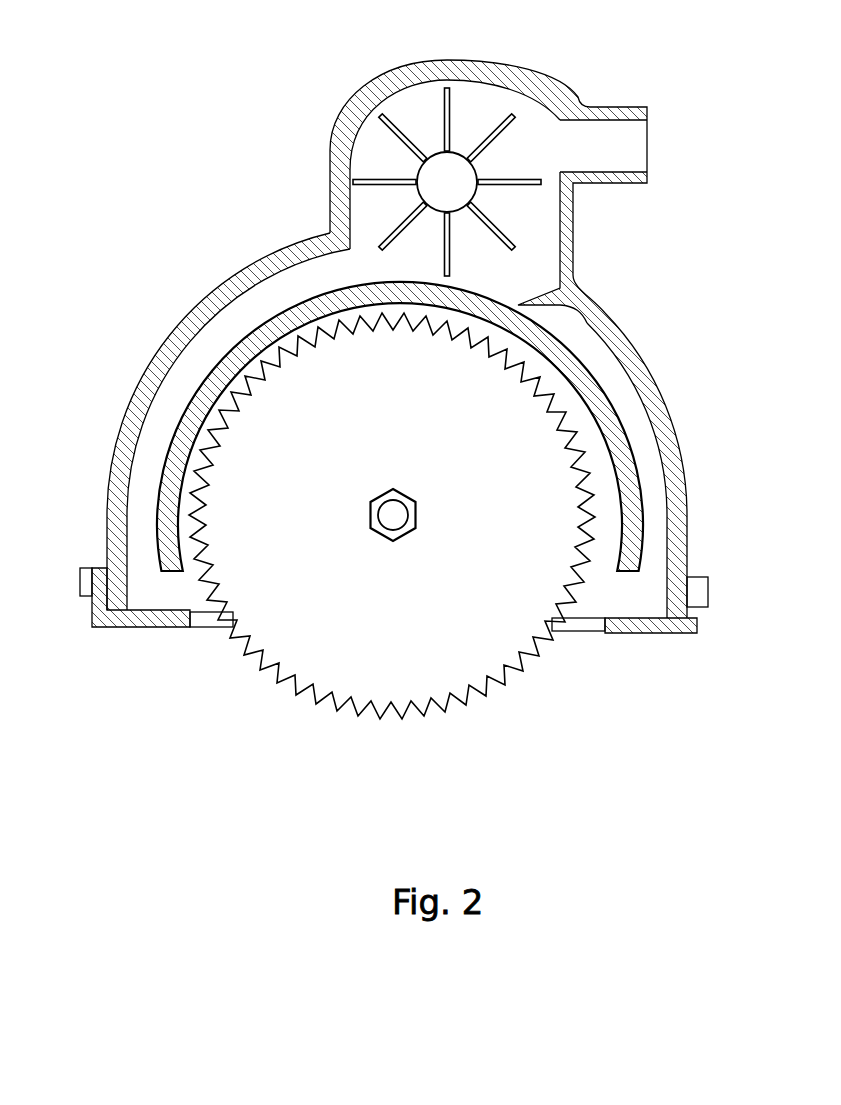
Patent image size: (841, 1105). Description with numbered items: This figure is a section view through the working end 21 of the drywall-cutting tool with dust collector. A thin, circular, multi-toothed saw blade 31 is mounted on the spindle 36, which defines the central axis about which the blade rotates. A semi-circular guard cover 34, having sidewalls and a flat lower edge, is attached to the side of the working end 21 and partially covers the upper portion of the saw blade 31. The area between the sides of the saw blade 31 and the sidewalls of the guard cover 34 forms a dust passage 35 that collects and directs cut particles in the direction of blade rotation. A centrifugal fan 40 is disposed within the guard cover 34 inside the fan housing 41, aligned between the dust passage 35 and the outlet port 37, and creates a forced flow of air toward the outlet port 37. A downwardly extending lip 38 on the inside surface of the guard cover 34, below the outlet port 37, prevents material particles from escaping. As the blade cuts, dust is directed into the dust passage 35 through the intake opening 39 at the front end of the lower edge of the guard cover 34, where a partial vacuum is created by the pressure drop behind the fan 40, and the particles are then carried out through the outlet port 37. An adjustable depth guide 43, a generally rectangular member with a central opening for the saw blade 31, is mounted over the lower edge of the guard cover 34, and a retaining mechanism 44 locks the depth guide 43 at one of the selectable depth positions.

The working end 21 is at (237, 238).
The saw blade 31 is at (478, 702).
The guard cover 34 is at (641, 357).
The dust passage 35 is at (226, 326).
The spindle 36 is at (373, 537).
The outlet port 37 is at (635, 107).
The downwardly extending lip 38 is at (530, 300).
The intake opening 39 is at (152, 515).
The centrifugal fan 40 is at (373, 177).
The fan housing 41 is at (375, 83).
The depth guide 43 is at (673, 633).
The retaining mechanism 44 is at (80, 580).